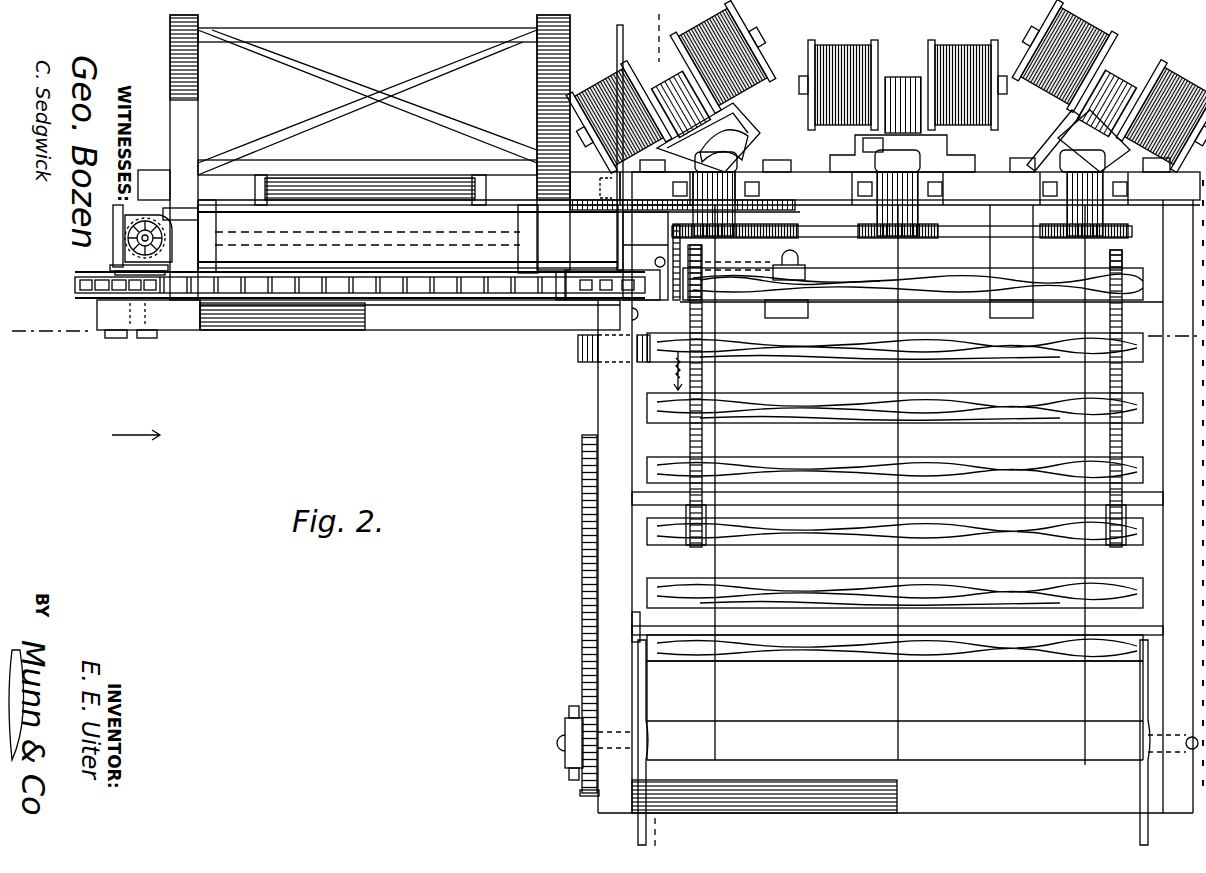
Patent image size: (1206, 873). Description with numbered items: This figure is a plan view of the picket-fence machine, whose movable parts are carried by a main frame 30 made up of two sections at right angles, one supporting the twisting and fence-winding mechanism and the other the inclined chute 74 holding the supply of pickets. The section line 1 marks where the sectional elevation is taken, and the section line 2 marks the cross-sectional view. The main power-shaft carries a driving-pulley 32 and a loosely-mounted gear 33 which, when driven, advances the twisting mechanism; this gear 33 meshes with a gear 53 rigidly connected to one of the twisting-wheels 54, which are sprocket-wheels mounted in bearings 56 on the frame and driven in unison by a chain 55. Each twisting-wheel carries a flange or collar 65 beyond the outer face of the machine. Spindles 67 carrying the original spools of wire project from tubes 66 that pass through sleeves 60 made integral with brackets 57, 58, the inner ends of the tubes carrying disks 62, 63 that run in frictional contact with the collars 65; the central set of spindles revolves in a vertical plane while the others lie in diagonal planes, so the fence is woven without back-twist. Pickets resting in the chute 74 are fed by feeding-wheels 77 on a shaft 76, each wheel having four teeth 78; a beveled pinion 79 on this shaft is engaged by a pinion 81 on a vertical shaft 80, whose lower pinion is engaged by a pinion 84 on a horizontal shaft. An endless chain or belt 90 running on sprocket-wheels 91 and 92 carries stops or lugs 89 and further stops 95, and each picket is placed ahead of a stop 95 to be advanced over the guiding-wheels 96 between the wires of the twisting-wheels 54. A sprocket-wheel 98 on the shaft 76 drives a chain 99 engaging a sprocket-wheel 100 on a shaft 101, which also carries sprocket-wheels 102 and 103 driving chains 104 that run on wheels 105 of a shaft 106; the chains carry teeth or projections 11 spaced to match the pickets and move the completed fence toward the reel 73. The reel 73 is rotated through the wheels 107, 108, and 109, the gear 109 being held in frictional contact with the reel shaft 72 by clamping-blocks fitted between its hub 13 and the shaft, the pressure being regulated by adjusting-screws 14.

The section line 1 1 is at (600, 333).
The section line 2 2 is at (663, 432).
The teeth or projections 11 is at (703, 334).
The hub 13 is at (565, 749).
The adjusting-screws 14 is at (570, 710).
The main frame 30 is at (885, 492).
The driving-pulley 32 is at (588, 363).
The gear 33 is at (595, 200).
The gear 53 is at (665, 203).
The twisting-wheels 54 is at (748, 226).
The chain 55 is at (840, 237).
The bearings 56 is at (898, 204).
The bracket 57 is at (945, 139).
The bracket 58 is at (750, 141).
The sleeves 60 is at (883, 87).
The disk 62 is at (740, 126).
The disk 63 is at (871, 145).
The flange or collar 65 is at (748, 165).
The tubes 66 is at (682, 82).
The spindles 67 is at (762, 60).
The shaft 72 is at (895, 710).
The reel 73 is at (646, 716).
The inclined chute 74 is at (380, 96).
The shaft 76 is at (655, 246).
The feeding-wheels 77 is at (368, 236).
The teeth 78 is at (212, 212).
The beveled pinion 79 is at (180, 214).
The vertical shaft 80 is at (160, 228).
The pinion 81 is at (145, 222).
The pinion 84 is at (113, 263).
The stops or lugs 89 is at (562, 278).
The endless chain or belt 90 is at (405, 280).
The sprocket-wheel 91 is at (97, 301).
The sprocket-wheel 92 is at (592, 280).
The stops or lugs 95 is at (638, 314).
The guiding-wheels 96 is at (830, 264).
The sprocket-wheel 98 is at (672, 250).
The chain 99 is at (672, 258).
The sprocket-wheel 100 is at (705, 248).
The shaft 101 is at (768, 280).
The sprocket-wheel 102 is at (715, 263).
The sprocket-wheel 103 is at (1122, 260).
The chains 104 is at (690, 322).
The wheels 105 is at (686, 516).
The shaft 106 is at (897, 498).
The gear 107 is at (582, 498).
The wheel 108 is at (583, 631).
The gear 109 is at (585, 796).